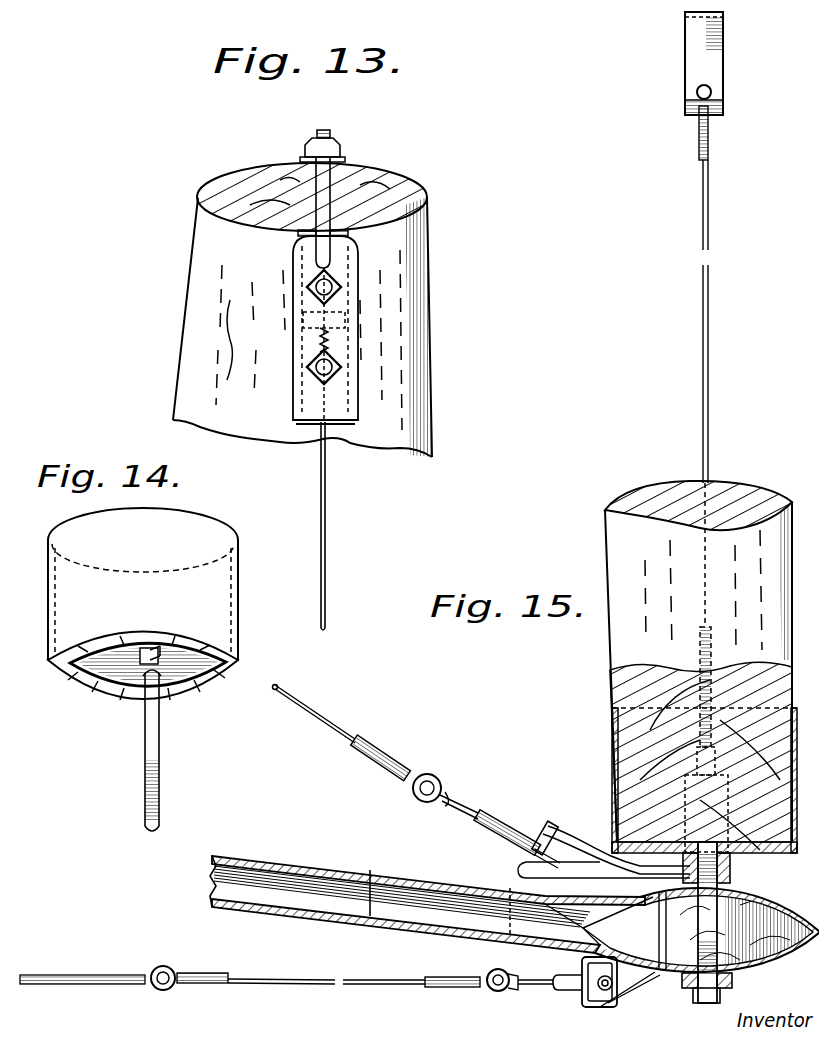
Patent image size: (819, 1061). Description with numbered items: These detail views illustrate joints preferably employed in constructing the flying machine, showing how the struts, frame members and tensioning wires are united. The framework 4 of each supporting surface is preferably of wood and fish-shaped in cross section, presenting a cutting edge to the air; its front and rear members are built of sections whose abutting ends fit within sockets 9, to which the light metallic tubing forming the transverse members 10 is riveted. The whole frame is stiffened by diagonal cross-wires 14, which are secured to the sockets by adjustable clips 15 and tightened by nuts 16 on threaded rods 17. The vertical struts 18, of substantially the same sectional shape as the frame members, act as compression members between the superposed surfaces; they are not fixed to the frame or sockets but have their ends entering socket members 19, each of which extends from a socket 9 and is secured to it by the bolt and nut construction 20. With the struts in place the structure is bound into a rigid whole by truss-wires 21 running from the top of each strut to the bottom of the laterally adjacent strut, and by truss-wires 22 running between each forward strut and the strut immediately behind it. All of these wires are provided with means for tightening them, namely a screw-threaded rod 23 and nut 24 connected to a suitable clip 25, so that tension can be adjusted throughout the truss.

In FIG. 13, the framework 4 is at (418, 192).
In FIG. 15, the framework 4 is at (777, 912).
In FIG. 15, the socket 9 is at (766, 894).
In FIG. 15, the transverse member 10 is at (318, 872).
In FIG. 15, the diagonal cross-wire 14 is at (426, 986).
In FIG. 15, the adjustable clip 15 is at (637, 1000).
In FIG. 15, the nut 16 is at (563, 986).
In FIG. 15, the threaded rod 17 is at (517, 991).
In FIG. 13, the vertical strut 18 is at (432, 378).
In FIG. 15, the vertical strut 18 is at (612, 540).
In FIG. 14, the socket member 19 is at (230, 604).
In FIG. 15, the socket member 19 is at (613, 743).
In FIG. 14, the bolt and nut construction 20 is at (177, 724).
In FIG. 15, the bolt and nut construction 20 is at (708, 1007).
In FIG. 13, the truss-wire 21 is at (327, 510).
In FIG. 15, the truss-wire 21 is at (722, 347).
In FIG. 15, the truss-wire 22 is at (342, 732).
In FIG. 15, the screw-threaded rod 23 is at (477, 808).
In FIG. 15, the nut 24 is at (529, 817).
In FIG. 15, the clip 25 is at (590, 829).